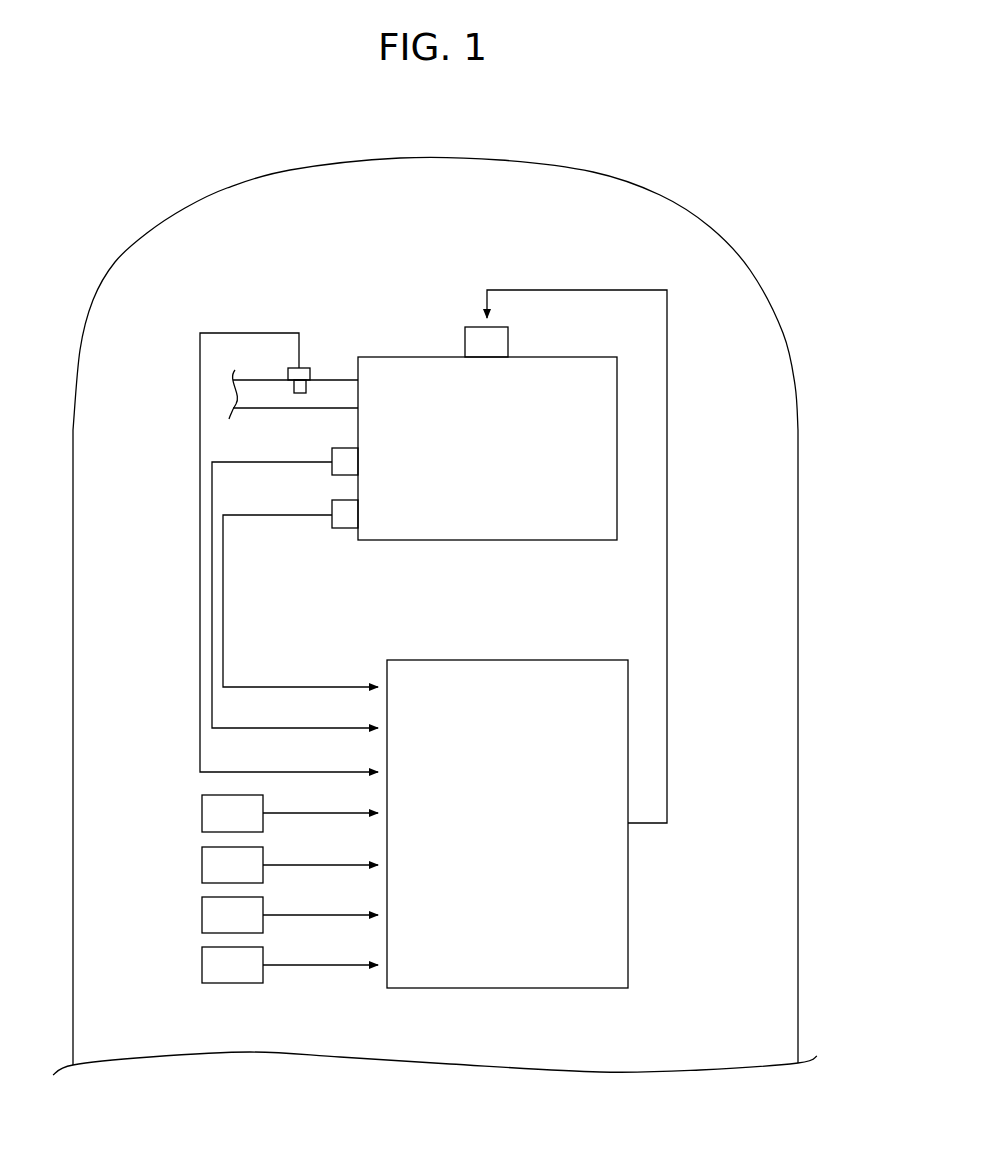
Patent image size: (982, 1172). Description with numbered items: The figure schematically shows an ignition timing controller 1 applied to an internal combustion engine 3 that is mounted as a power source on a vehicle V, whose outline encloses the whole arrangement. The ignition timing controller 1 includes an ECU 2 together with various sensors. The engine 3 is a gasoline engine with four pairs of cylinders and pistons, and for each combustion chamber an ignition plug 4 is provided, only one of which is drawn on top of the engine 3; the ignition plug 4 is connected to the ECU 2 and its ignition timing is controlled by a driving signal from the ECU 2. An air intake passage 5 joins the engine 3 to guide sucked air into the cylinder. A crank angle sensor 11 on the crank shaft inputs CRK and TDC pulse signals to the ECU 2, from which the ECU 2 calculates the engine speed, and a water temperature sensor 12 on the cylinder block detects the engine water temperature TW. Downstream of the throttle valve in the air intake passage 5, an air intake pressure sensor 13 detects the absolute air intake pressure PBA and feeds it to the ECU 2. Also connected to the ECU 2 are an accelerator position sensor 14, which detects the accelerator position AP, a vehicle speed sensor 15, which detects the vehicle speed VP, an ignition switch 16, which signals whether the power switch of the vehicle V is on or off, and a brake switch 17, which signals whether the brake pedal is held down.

The vehicle V is at (593, 172).
The ignition timing controller 1 is at (667, 985).
The ECU 2 is at (547, 660).
The internal combustion engine 3 is at (437, 541).
The ignition plug 4 is at (508, 340).
The air intake passage 5 is at (331, 380).
The crank angle sensor 11 is at (336, 528).
The water temperature sensor 12 is at (333, 450).
The air intake pressure sensor 13 is at (288, 368).
The accelerator position sensor 14 is at (202, 810).
The vehicle speed sensor 15 is at (202, 860).
The ignition switch 16 is at (202, 910).
The brake switch 17 is at (202, 960).